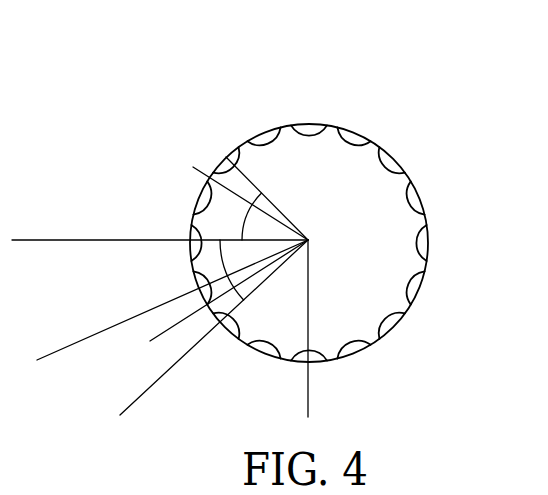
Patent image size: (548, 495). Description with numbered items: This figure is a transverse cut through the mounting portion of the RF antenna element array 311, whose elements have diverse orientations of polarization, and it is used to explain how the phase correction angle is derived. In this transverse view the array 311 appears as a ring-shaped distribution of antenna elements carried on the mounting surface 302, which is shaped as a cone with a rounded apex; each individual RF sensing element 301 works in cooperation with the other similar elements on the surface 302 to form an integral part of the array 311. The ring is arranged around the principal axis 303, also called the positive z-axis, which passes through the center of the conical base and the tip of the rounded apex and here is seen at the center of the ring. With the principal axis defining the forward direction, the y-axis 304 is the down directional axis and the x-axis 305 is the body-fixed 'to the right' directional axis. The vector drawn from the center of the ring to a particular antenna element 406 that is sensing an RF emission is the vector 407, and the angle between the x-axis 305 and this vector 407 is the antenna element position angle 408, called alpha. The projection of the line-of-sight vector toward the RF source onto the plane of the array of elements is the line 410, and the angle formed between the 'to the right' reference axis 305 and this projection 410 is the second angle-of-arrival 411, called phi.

The RF antenna element array 311 is at (345, 193).
The mounting surface 302 is at (427, 262).
The RF sensing element 301 is at (389, 325).
The antenna element 406 is at (226, 160).
The x-axis 305 is at (128, 240).
The y-axis 304 is at (311, 366).
The antenna element position angle 408 is at (228, 196).
The vector from ring center to antenna element 407 is at (277, 207).
The principal axis 303 is at (133, 317).
The second angle-of-arrival 411 is at (150, 341).
The line-of-sight vector projection 410 is at (185, 354).